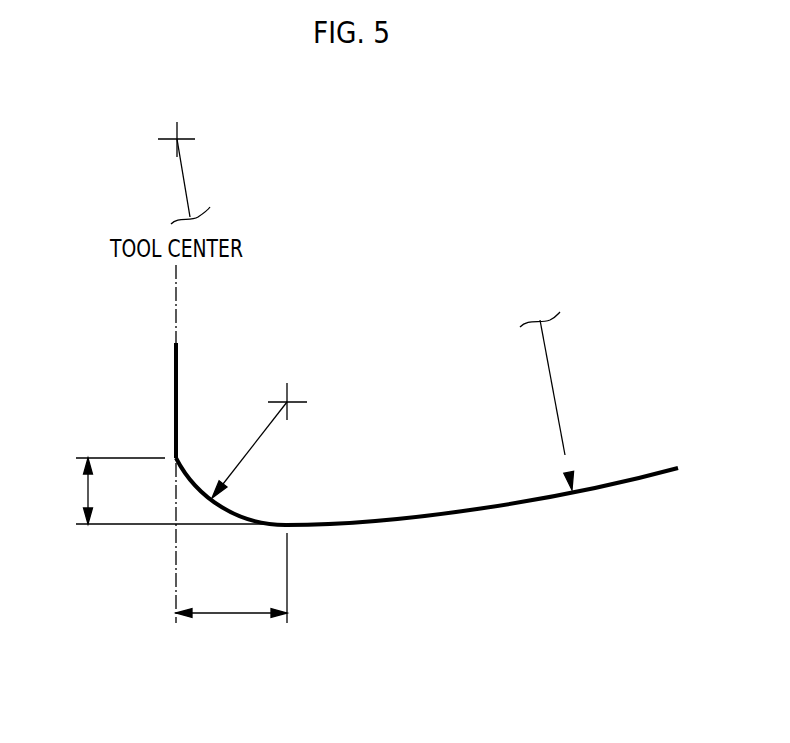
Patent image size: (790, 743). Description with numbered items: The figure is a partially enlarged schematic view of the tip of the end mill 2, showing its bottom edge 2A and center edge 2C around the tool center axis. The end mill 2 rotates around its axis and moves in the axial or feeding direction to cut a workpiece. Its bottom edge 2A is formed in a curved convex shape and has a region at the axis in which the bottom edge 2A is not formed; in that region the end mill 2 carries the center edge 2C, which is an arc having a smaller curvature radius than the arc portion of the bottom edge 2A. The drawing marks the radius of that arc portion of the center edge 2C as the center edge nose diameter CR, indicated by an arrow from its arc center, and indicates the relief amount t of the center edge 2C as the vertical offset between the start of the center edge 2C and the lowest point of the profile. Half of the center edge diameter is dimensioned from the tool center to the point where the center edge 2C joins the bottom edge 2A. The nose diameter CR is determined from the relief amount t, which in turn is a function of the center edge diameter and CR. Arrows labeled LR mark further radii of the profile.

The end mill 2 is at (405, 472).
The bottom edge 2A is at (443, 512).
The center edge 2C is at (207, 463).
The lens radius LR is at (185, 180).
The center edge nose diameter CR is at (248, 447).
The relief amount t is at (162, 491).